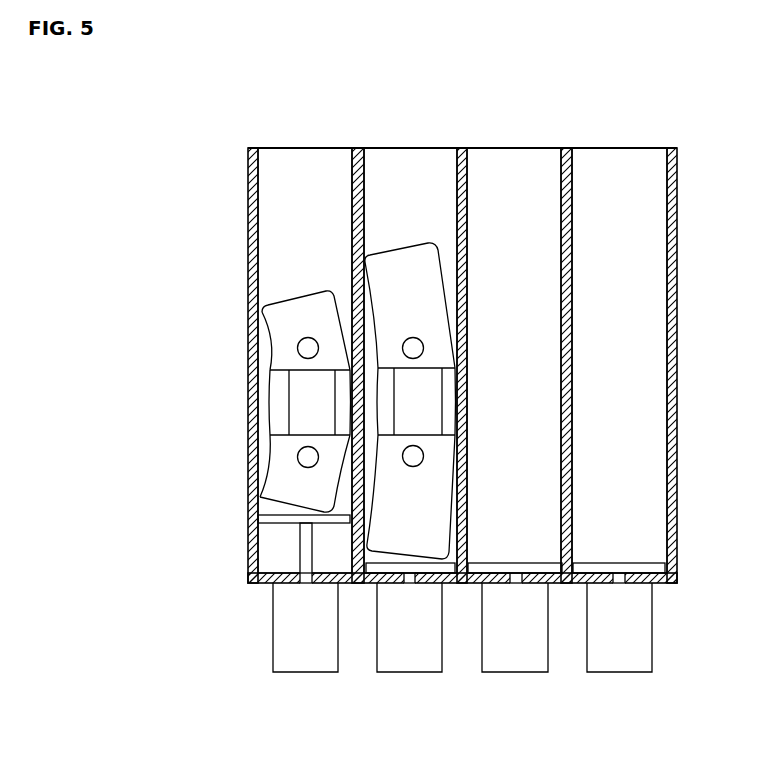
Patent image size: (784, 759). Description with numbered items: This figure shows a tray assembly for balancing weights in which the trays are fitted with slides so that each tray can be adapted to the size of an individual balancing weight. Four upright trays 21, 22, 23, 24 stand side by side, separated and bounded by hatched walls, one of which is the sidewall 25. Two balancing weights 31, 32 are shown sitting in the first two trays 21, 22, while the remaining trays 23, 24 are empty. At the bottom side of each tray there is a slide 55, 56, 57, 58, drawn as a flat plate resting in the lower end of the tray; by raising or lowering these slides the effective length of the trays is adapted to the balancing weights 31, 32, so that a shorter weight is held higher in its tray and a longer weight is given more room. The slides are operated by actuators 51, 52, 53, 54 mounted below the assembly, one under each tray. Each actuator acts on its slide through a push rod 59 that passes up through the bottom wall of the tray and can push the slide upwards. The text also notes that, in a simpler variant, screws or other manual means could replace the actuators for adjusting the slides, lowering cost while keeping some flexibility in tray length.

The tray 21 is at (303, 165).
The tray 22 is at (410, 165).
The tray 23 is at (518, 165).
The tray 24 is at (612, 156).
The sidewall 25 is at (566, 152).
The balancing weight 31 is at (295, 312).
The balancing weight 32 is at (400, 262).
The actuator 51 is at (308, 653).
The actuator 52 is at (413, 653).
The actuator 53 is at (517, 653).
The actuator 54 is at (622, 653).
The slide 55 is at (268, 520).
The slide 56 is at (409, 568).
The slide 57 is at (513, 568).
The slide 58 is at (618, 568).
The push rod 59 is at (306, 550).